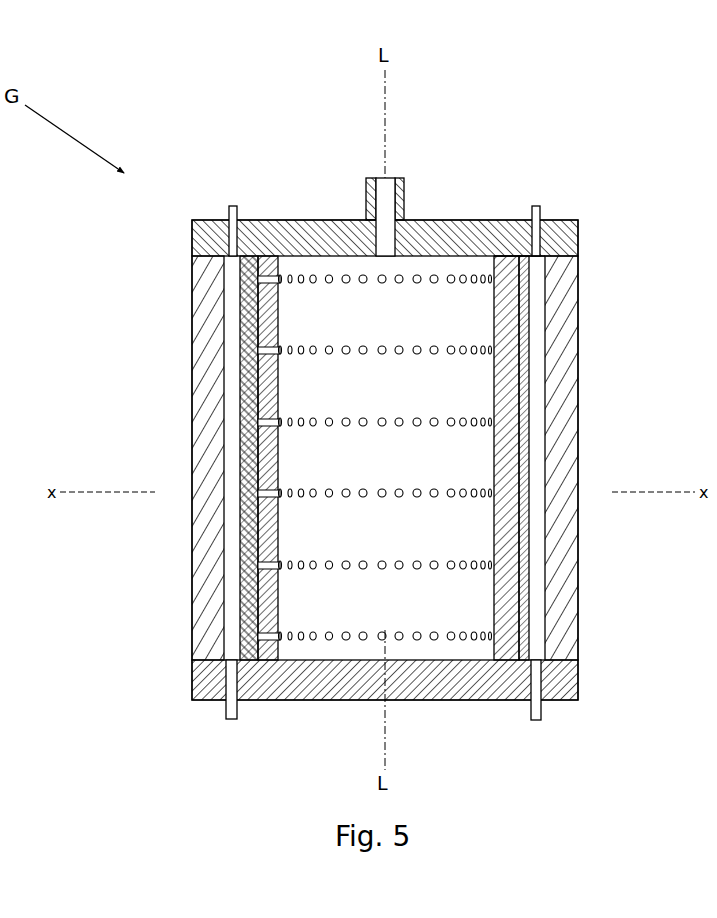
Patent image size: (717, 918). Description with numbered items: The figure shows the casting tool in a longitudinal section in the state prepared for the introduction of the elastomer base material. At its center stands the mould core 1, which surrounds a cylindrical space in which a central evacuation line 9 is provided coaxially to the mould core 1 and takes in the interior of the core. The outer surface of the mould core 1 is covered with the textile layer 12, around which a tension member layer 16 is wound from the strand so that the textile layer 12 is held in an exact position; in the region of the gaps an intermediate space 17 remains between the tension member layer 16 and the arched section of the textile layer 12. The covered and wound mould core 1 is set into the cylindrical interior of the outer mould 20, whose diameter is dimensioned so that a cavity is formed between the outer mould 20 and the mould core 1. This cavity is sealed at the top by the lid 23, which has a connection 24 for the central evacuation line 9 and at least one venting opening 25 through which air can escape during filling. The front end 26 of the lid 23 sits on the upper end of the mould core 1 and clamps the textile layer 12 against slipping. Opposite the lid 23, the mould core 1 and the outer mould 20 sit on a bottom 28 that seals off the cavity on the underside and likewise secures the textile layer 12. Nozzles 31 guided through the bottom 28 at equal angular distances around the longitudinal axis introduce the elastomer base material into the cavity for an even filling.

The mould core 1 is at (507, 380).
The central evacuation line 9 is at (404, 470).
The textile layer 12 is at (238, 445).
The tension member layer 16 is at (242, 405).
The intermediate space 17 is at (244, 362).
The outer mould 20 is at (192, 290).
The lid 23 is at (293, 220).
The connection 24 is at (396, 226).
The venting opening 25 is at (231, 206).
The front end 26 is at (495, 265).
The bottom 28 is at (450, 690).
The nozzle 31 is at (226, 716).